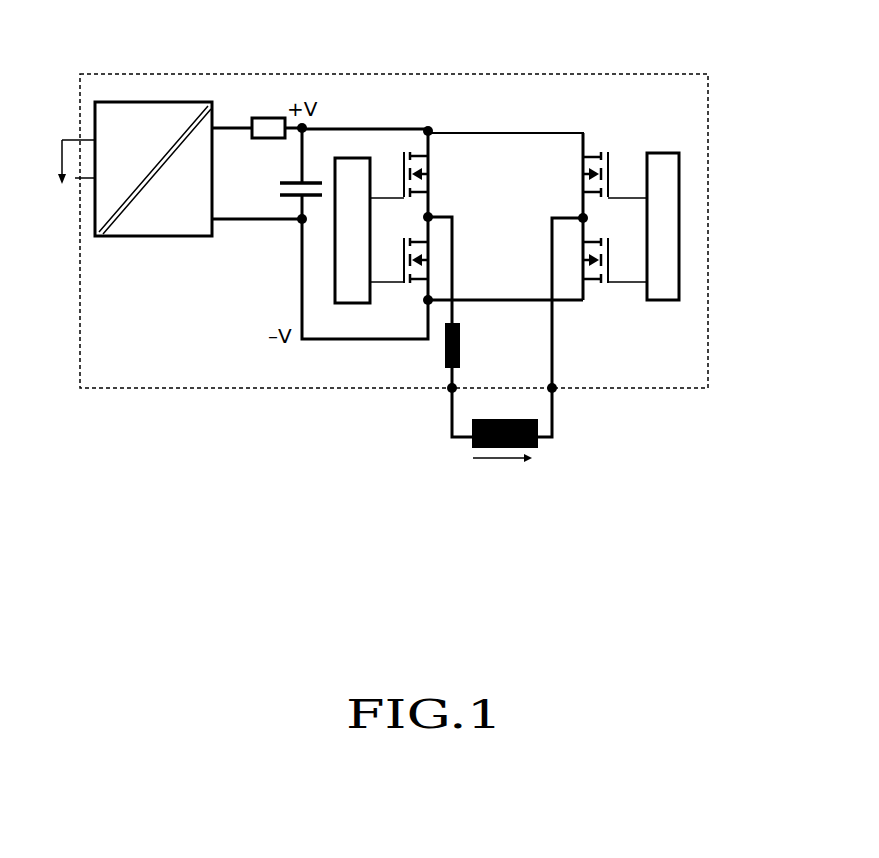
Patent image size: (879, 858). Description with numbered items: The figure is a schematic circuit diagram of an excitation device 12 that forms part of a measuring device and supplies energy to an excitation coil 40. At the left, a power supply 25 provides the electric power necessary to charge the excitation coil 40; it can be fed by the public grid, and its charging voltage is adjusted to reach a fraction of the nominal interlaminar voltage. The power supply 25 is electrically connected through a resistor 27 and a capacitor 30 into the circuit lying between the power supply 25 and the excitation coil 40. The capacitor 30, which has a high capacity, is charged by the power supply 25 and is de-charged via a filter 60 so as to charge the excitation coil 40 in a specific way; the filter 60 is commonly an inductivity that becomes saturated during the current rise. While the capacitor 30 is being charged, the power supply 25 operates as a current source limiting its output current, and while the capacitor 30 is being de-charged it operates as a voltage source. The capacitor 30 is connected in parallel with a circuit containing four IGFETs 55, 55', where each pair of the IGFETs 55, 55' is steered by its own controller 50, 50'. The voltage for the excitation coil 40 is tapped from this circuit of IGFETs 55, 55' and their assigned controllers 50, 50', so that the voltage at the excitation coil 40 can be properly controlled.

The excitation device 12 is at (643, 38).
The power supply 25 is at (147, 113).
The resistor 27 is at (259, 118).
The capacitor 30 is at (288, 197).
The controller 50 is at (373, 159).
The controller 50' is at (701, 226).
The IGFETs 55 is at (446, 218).
The IGFETs 55' is at (563, 216).
The filter 60 is at (445, 352).
The excitation coil 40 is at (538, 438).